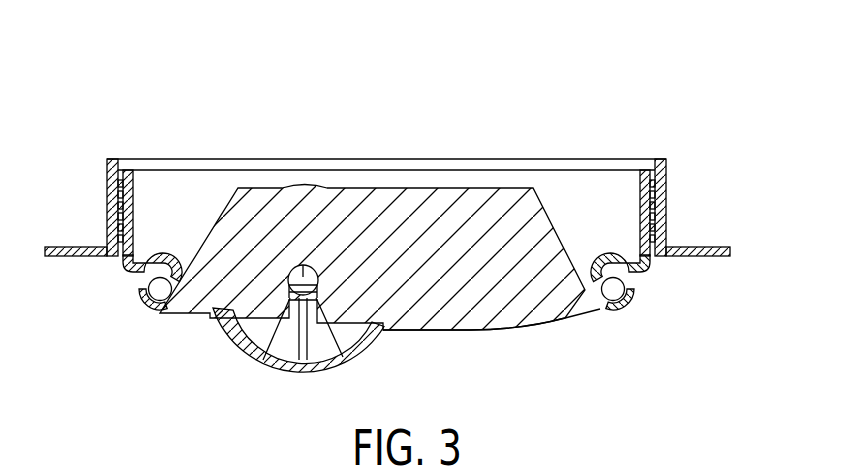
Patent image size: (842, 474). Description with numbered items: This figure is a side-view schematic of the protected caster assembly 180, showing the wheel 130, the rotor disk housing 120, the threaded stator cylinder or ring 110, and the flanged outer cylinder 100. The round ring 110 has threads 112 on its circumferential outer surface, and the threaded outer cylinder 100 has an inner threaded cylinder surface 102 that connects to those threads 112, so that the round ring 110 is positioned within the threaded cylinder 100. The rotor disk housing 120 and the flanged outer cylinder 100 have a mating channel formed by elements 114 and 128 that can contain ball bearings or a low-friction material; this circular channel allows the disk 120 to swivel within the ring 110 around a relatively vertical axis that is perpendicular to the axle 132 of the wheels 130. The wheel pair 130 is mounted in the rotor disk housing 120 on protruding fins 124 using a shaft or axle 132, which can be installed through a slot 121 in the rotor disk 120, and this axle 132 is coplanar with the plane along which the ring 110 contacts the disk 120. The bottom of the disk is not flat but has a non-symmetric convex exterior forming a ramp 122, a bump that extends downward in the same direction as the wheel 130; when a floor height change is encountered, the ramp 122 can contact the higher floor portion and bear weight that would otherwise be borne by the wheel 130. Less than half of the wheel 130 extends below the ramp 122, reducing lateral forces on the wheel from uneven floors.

The protected caster assembly 180 is at (199, 72).
The flanged outer cylinder 100 is at (107, 199).
The inner threaded cylinder surface 102 is at (638, 176).
The threads 112 is at (666, 222).
The threaded stator cylinder or ring 110 is at (138, 269).
The mating channel element 114 is at (627, 270).
The rotor disk housing 120 is at (165, 311).
The mating channel element 128 is at (627, 294).
The protruding fins 124 is at (417, 210).
The ramp 122 is at (497, 330).
The wheel 130 is at (245, 349).
The slot 121 is at (310, 293).
The shaft or axle 132 is at (297, 293).